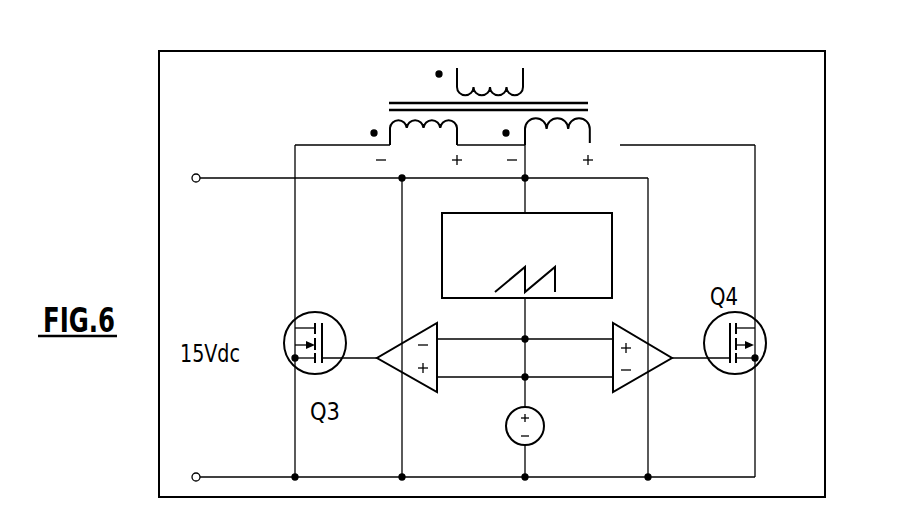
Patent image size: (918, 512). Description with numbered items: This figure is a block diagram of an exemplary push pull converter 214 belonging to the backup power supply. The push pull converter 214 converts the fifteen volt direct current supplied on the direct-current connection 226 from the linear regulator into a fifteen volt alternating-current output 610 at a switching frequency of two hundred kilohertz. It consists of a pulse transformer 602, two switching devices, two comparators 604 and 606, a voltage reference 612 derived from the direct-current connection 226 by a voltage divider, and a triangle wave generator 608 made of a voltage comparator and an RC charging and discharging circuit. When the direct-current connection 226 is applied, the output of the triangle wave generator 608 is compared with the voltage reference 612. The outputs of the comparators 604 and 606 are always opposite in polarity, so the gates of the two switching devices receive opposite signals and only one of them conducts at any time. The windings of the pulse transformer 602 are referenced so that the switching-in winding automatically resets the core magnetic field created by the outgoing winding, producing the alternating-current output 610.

The push pull converter 214 is at (810, 488).
The 15 Vdc connection 226 is at (264, 204).
The pulse transformer 602 is at (346, 116).
The comparator 604 is at (388, 351).
The comparator 606 is at (658, 366).
The triangle wave generator 608 is at (442, 266).
The 15 Vac output 610 is at (489, 68).
The voltage reference 612 is at (527, 388).